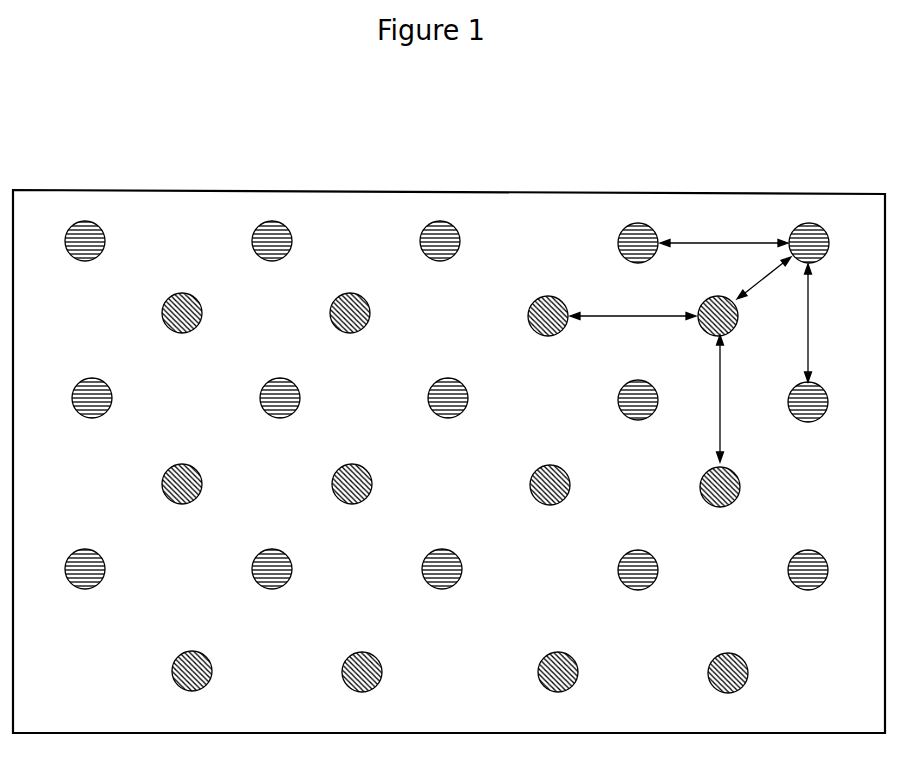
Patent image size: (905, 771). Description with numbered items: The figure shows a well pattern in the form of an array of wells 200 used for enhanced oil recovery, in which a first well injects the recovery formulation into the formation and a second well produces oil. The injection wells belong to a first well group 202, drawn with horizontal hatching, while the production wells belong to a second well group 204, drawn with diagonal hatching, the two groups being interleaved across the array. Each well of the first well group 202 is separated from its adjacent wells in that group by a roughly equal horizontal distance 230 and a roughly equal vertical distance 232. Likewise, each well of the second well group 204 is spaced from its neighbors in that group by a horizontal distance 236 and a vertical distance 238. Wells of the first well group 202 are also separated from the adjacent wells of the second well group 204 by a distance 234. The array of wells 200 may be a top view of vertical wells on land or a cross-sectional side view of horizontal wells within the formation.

The array of wells 200 is at (80, 185).
The first well group 202 is at (427, 374).
The second well group 204 is at (326, 297).
The horizontal distance 230 is at (724, 235).
The vertical distance 232 is at (818, 323).
The distance 234 is at (764, 277).
The horizontal distance 236 is at (633, 308).
The vertical distance 238 is at (711, 398).